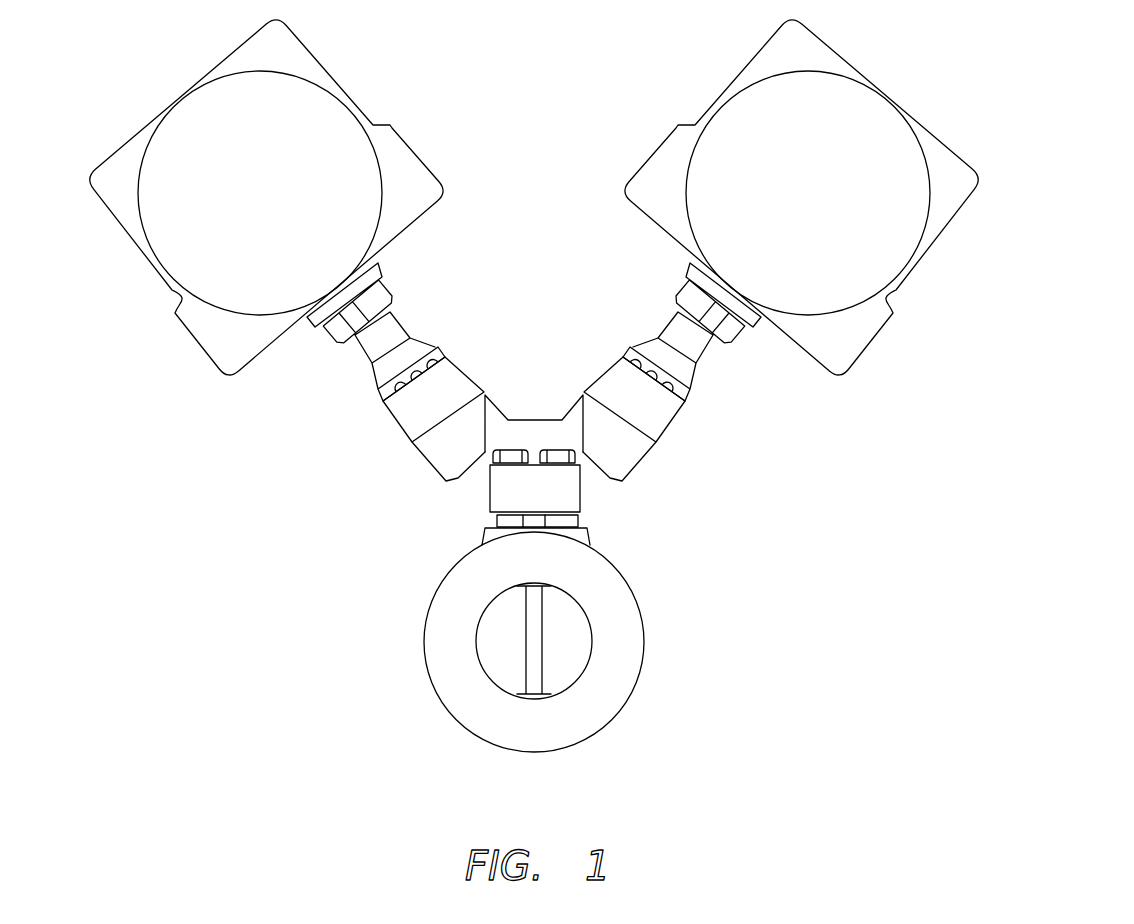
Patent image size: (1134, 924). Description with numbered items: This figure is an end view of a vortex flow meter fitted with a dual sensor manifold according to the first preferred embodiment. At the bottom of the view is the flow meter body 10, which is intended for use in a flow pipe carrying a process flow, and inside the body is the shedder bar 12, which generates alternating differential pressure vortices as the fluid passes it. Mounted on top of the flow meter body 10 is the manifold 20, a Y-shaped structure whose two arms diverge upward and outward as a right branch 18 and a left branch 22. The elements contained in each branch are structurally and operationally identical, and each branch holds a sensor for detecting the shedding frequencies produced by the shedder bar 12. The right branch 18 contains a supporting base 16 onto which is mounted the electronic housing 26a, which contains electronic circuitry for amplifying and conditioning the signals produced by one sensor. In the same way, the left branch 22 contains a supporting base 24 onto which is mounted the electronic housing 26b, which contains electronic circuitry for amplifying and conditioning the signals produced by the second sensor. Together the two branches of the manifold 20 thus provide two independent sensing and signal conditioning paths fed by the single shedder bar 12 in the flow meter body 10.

The flow meter body 10 is at (645, 666).
The shedder bar 12 is at (543, 625).
The supporting base 16 is at (652, 428).
The right branch 18 is at (670, 457).
The manifold 20 is at (583, 378).
The left branch 22 is at (467, 538).
The supporting base 24 is at (427, 430).
The electronic housing 26a is at (797, 318).
The electronic housing 26b is at (273, 318).